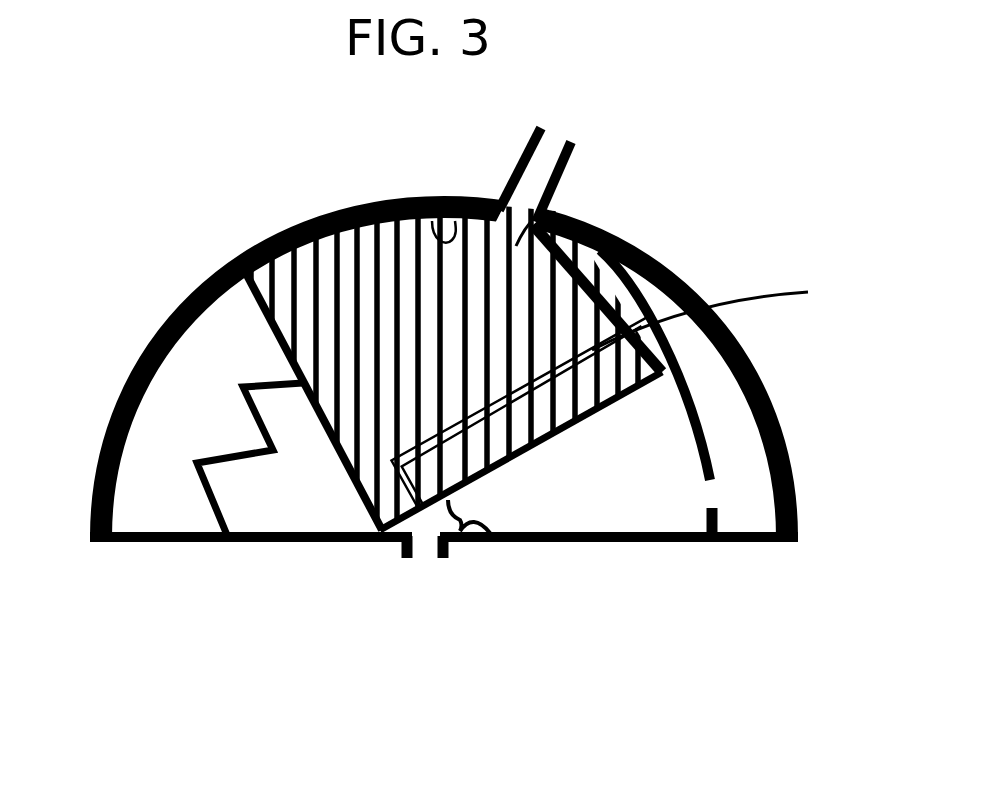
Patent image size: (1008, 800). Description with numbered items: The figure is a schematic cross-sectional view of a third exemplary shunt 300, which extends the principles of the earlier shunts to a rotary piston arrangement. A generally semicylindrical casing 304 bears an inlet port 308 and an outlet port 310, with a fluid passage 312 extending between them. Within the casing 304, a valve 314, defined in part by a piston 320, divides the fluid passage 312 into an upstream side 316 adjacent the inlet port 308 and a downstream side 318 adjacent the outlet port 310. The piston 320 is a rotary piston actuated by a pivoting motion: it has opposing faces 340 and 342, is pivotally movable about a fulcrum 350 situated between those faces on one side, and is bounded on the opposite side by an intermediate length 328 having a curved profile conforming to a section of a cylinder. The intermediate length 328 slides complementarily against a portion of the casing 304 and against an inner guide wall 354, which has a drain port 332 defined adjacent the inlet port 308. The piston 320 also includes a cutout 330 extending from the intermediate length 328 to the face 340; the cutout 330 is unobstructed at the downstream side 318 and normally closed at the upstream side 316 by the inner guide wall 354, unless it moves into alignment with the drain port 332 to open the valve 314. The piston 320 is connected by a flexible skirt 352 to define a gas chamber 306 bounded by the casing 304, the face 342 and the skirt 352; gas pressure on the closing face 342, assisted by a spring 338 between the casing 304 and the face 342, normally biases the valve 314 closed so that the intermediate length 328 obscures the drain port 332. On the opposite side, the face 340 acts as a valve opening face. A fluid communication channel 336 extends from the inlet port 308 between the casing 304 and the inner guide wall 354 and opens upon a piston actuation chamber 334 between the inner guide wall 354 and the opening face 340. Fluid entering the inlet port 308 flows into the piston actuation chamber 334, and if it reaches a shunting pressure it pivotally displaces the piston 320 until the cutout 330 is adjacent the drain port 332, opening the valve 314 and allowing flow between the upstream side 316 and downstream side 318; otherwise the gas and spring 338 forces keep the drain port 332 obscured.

The shunt 300 is at (188, 154).
The semicylindrical casing 304 is at (196, 300).
The gas chamber 306 is at (203, 372).
The inlet port 308 is at (537, 134).
The outlet port 310 is at (399, 547).
The fluid passage 312 is at (640, 293).
The valve 314 is at (566, 220).
The upstream side 316 is at (473, 193).
The downstream side 318 is at (430, 523).
The piston 320 is at (327, 262).
The intermediate length 328 is at (575, 262).
The cutout 330 is at (808, 293).
The drain port 332 is at (552, 208).
The piston actuation chamber 334 is at (612, 470).
The fluid communication channel 336 is at (717, 393).
The spring 338 is at (217, 451).
The piston face 340 is at (490, 473).
The piston face 342 is at (327, 447).
The fulcrum 350 is at (374, 530).
The flexible skirt 352 is at (493, 542).
The inner guide wall 354 is at (423, 187).